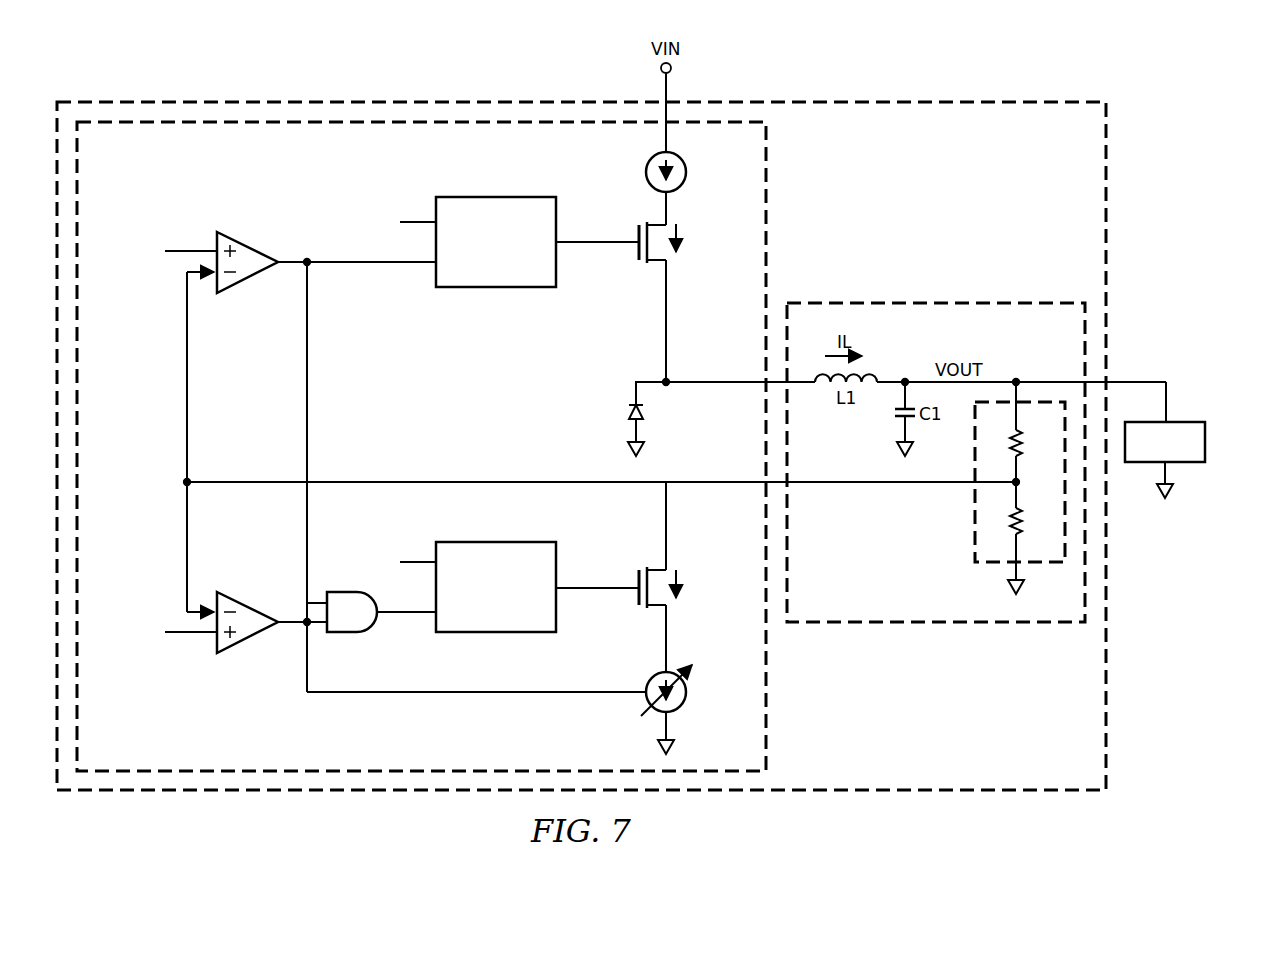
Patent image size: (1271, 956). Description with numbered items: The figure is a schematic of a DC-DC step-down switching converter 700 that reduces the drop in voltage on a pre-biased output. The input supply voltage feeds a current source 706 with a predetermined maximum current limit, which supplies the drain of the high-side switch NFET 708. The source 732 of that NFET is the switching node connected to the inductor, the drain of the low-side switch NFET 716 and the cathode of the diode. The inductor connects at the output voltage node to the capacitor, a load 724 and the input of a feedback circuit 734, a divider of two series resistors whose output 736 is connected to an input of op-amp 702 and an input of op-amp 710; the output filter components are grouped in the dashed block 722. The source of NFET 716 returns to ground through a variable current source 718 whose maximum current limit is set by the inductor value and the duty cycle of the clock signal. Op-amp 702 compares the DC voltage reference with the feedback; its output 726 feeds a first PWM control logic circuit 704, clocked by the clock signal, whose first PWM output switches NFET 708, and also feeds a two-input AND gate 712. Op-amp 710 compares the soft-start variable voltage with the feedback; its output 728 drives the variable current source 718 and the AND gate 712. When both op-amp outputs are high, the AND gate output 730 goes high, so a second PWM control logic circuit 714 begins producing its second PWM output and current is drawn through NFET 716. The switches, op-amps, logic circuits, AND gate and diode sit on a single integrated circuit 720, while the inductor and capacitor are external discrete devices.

The DC-DC step-down switching converter 700 is at (337, 100).
The first op-amp 702 is at (246, 248).
The first PWM control logic circuit 704 is at (496, 288).
The current source 706 is at (687, 174).
The high-side switch NFET 708 is at (636, 252).
The second op-amp 710 is at (248, 638).
The two-input AND gate 712 is at (350, 636).
The second PWM control logic circuit 714 is at (496, 540).
The low-side switch NFET 716 is at (636, 597).
The variable current source 718 is at (688, 698).
The integrated circuit 720 is at (770, 222).
The output filter 722 is at (935, 300).
The load 724 is at (1207, 443).
The output of first op-amp 726 is at (371, 270).
The output of second op-amp 728 is at (473, 702).
The output of AND gate 730 is at (397, 616).
The source of high-side NFET 732 is at (666, 322).
The feedback circuit 734 is at (973, 520).
The output of feedback circuit 736 is at (214, 463).